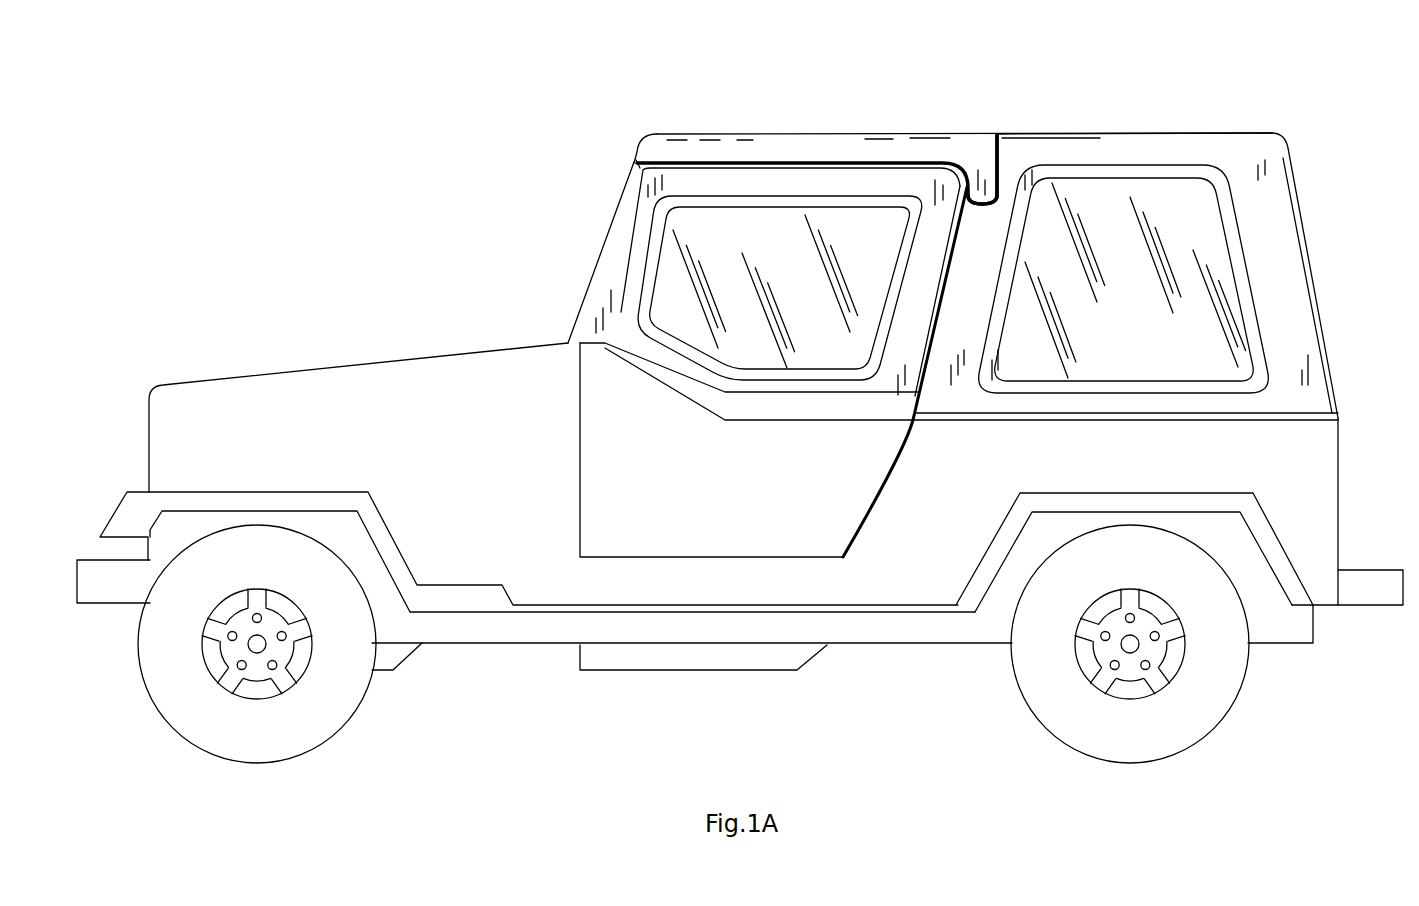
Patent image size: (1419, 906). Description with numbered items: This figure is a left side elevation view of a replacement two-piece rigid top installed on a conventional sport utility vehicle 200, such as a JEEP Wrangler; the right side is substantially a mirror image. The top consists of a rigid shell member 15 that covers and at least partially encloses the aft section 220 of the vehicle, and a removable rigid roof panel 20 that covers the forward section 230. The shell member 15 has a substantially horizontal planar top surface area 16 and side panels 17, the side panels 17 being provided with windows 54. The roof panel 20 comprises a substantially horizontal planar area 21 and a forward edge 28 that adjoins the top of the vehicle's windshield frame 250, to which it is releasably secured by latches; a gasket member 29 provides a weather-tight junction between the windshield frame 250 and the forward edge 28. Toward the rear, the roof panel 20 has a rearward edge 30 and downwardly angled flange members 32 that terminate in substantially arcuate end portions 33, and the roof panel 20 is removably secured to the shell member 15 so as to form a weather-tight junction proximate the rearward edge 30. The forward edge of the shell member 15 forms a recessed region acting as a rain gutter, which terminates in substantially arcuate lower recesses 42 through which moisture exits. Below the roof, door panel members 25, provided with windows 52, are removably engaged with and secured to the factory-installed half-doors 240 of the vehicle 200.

The sport utility vehicle 200 is at (316, 361).
The aft section 220 is at (1070, 452).
The forward section 230 is at (657, 583).
The factory-installed half-door 240 is at (837, 513).
The door panel member 25 is at (903, 397).
The windshield frame 250 is at (622, 189).
The window 52 is at (655, 284).
The rigid roof panel 20 is at (759, 125).
The substantially horizontal planar area 21 is at (842, 130).
The forward edge 28 is at (640, 150).
The gasket member 29 is at (635, 160).
The downwardly angled flange member 32 is at (985, 145).
The rearward edge 30 is at (985, 131).
The end portion 33 is at (985, 183).
The lower recess 42 is at (982, 206).
The substantially horizontal planar top surface area 16 is at (1122, 133).
The rigid shell member 15 is at (1207, 122).
The side panel 17 is at (1278, 239).
The window 54 is at (1212, 200).